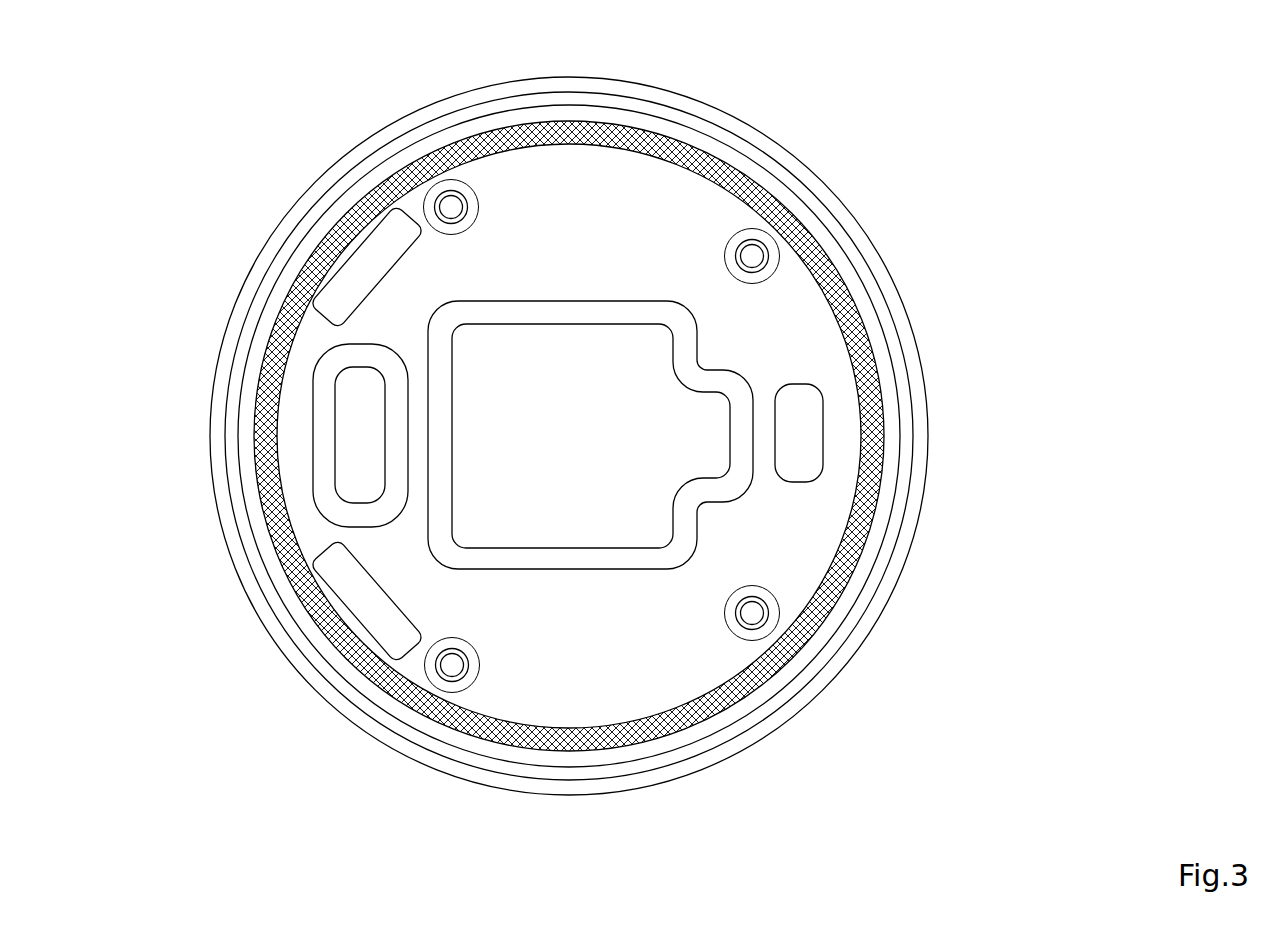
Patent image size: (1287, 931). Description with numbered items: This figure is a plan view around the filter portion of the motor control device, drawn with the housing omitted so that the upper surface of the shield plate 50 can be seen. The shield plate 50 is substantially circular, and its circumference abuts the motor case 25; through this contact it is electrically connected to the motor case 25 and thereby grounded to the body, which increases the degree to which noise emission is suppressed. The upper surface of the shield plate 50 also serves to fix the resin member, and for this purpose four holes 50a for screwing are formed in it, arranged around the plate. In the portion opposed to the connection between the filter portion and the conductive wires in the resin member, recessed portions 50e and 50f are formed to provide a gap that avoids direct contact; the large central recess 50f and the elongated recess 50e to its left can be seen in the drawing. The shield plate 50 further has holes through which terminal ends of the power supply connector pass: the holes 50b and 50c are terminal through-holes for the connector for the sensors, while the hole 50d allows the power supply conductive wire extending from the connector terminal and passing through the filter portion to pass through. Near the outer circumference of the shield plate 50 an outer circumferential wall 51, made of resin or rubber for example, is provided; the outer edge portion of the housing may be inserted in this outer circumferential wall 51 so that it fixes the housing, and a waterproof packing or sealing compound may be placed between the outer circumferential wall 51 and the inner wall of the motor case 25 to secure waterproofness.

The motor case 25 is at (925, 445).
The shield plate 50 is at (834, 244).
The holes for screwing 50a is at (440, 205).
The hole 50b is at (318, 243).
The hole 50c is at (347, 620).
The hole 50d is at (822, 390).
The recessed portion 50e is at (335, 448).
The recessed portion 50f is at (576, 322).
The outer circumferential wall 51 is at (862, 552).